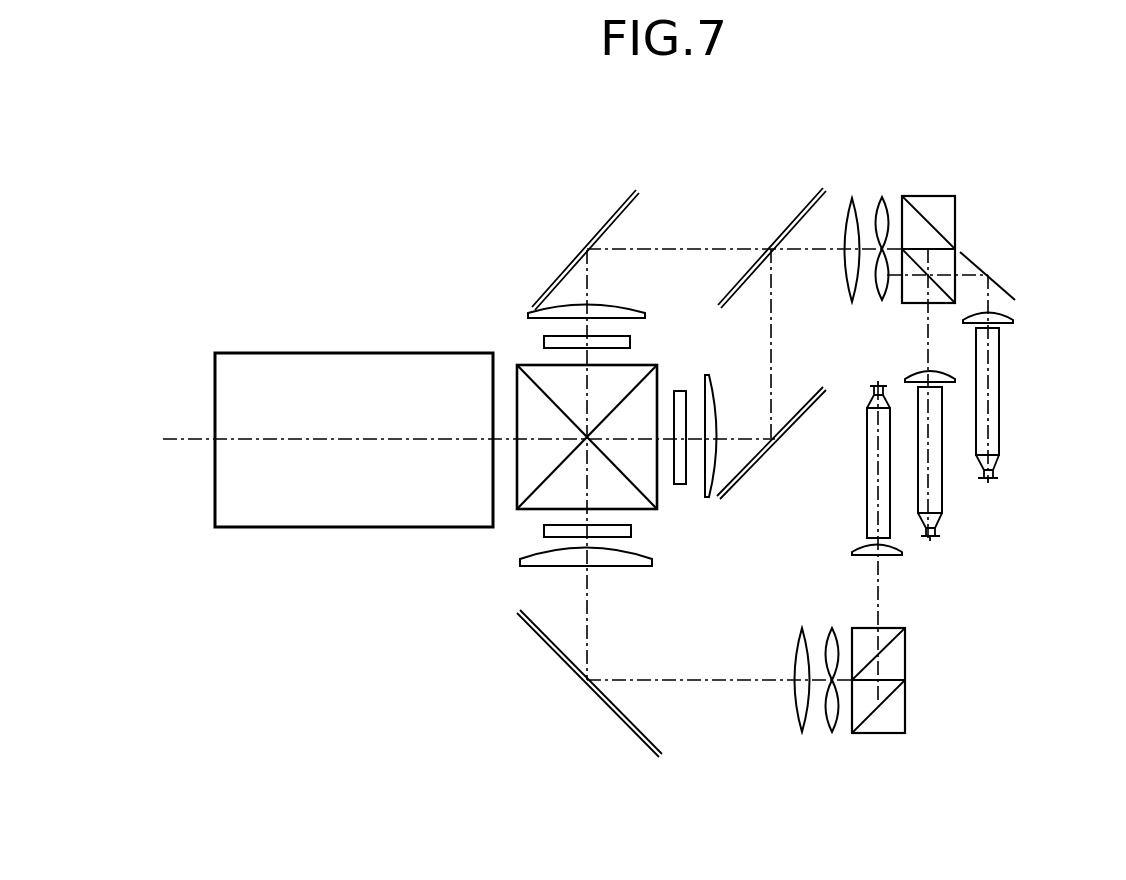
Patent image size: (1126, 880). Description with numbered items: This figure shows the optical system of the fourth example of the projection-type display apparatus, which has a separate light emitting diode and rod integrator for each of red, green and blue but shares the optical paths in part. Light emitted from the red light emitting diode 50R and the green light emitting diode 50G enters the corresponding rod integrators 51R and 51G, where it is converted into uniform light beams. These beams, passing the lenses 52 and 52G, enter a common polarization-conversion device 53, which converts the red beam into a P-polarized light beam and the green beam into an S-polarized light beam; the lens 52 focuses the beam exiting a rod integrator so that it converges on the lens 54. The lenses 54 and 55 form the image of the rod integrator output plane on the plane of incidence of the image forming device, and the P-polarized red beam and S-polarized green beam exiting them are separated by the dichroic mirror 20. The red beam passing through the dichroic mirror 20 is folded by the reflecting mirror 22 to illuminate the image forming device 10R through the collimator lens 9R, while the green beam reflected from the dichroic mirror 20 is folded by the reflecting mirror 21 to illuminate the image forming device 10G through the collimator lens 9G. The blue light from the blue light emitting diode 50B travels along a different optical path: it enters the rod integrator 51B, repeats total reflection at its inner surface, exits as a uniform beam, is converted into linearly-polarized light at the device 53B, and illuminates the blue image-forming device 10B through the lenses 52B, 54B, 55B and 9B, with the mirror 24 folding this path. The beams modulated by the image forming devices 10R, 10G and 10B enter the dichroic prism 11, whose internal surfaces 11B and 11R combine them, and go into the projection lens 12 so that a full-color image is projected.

The projection lens 12 is at (290, 365).
The dichroic prism 11 is at (543, 458).
The blue reflecting dichroic surface 11B is at (545, 407).
The red reflecting dichroic surface 11R is at (545, 478).
The image forming device 10R is at (545, 338).
The image forming device 10G is at (680, 392).
The blue image-forming device 10B is at (545, 535).
The collimator lens 9R is at (618, 306).
The collimator lens 9G is at (712, 386).
The lens 9B is at (615, 565).
The reflecting mirror 22 is at (605, 225).
The dichroic mirror 20 is at (797, 212).
The reflecting mirror 21 is at (805, 385).
The blue light reflecting mirror 24 is at (608, 705).
The lens 55 is at (853, 195).
The lens 54 is at (883, 195).
The polarization-conversion device 53 is at (955, 207).
The lens 52 is at (915, 372).
The green collimator lens 52G is at (1012, 313).
The lens 52B is at (860, 553).
The rod integrator 51G is at (1000, 392).
The rod integrator 51R is at (943, 487).
The rod integrator 51B is at (868, 490).
The green light emitting diode 50G is at (995, 477).
The red light emitting diode 50R is at (930, 541).
The blue light emitting diode 50B is at (872, 388).
The lens 55B is at (803, 737).
The lens 54B is at (835, 733).
The blue polarization beam splitter prism 53B is at (905, 700).